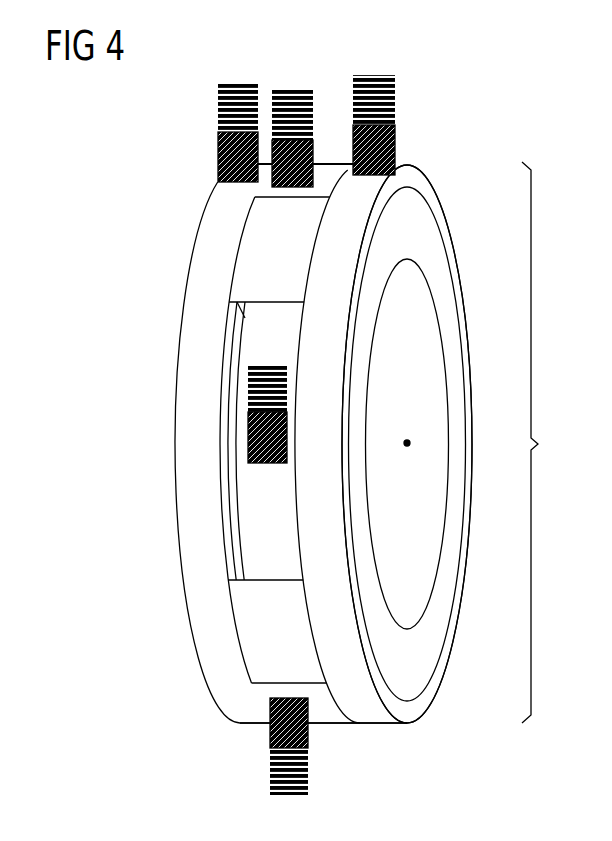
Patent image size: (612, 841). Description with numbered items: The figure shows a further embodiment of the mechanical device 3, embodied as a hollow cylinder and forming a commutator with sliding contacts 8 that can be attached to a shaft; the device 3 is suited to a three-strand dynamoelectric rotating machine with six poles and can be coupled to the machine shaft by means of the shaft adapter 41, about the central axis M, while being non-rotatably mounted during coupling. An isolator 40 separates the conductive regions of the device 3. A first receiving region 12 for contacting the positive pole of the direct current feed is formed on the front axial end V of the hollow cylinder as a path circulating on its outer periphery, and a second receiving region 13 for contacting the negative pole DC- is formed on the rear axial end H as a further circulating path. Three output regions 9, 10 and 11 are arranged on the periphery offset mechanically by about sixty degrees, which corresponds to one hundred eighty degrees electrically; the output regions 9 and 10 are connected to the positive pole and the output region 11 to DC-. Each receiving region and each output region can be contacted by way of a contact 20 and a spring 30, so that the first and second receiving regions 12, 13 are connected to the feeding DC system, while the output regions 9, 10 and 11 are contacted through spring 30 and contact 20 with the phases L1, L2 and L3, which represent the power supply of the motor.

The mechanical device 3 is at (541, 442).
The sliding contacts 8 is at (450, 704).
The output region 9 is at (322, 165).
The output region 10 is at (332, 714).
The output region 11 is at (248, 478).
The first receiving region 12 is at (190, 528).
The second receiving region 13 is at (372, 714).
The contact 20 is at (270, 712).
The spring 30 is at (290, 795).
The isolator 40 is at (258, 242).
The shaft adapter 41 is at (446, 264).
The center axis M is at (407, 443).
The rear axial end H is at (424, 118).
The front axial end V is at (206, 745).
The negative pole of direct current feed DC- is at (382, 72).
The phase L1 is at (295, 84).
The phase L2 is at (256, 762).
The phase L3 is at (268, 360).